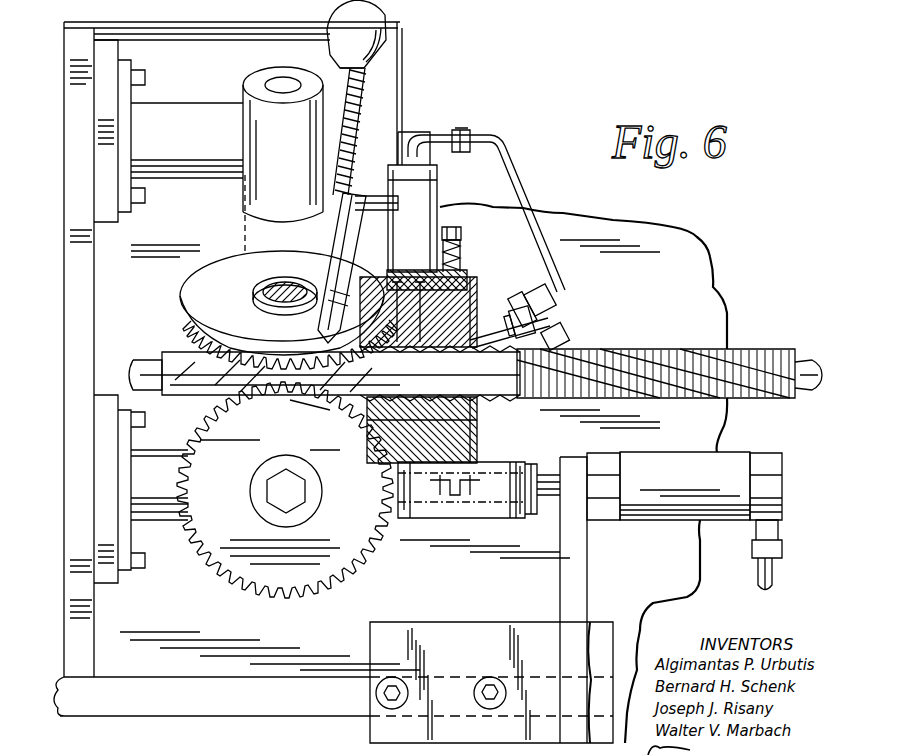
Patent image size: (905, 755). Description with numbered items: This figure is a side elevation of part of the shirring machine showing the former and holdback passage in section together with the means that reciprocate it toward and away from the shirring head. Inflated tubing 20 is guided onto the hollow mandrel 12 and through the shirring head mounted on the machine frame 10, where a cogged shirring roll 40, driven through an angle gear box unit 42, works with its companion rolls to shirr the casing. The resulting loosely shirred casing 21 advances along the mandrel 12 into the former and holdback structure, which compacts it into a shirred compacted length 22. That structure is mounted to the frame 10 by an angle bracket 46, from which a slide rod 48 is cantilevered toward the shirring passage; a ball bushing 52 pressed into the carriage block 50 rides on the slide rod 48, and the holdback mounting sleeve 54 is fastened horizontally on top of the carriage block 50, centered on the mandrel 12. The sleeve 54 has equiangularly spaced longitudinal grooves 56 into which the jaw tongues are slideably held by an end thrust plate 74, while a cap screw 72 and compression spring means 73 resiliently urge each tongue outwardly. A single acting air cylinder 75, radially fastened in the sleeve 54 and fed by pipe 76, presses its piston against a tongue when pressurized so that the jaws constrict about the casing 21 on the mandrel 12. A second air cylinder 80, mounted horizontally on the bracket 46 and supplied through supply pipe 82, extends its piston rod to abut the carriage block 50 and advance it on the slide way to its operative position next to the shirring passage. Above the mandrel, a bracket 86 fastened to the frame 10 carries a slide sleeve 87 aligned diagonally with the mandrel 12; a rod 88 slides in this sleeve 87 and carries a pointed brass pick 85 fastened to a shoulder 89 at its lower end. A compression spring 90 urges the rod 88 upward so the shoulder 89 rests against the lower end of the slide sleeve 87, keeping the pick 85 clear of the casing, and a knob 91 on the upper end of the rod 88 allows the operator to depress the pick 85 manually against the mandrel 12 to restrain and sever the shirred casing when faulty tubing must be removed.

The machine frame 10 is at (312, 705).
The hollow mandrel 12 is at (143, 359).
The metered inflated tubing 20 is at (173, 348).
The loosely shirred casing 21 is at (340, 402).
The shirred compacted length 22 is at (574, 349).
The cogged shirring roll 40 is at (218, 540).
The angle gear box unit 42 is at (143, 524).
The angle bracket 46 is at (585, 594).
The slide rod 48 is at (546, 505).
The carriage block 50 is at (473, 518).
The ball bushing 52 is at (529, 466).
The holdback mounting sleeve 54 is at (473, 446).
The groove 56 is at (471, 314).
The cap screw 72 is at (450, 230).
The compression spring means 73 is at (461, 257).
The end thrust plate 74 is at (467, 279).
The single acting air cylinder 75 is at (437, 197).
The pipe 76 is at (509, 178).
The air cylinder 80 is at (725, 457).
The supply pipe 82 is at (776, 572).
The pointed brass pick 85 is at (288, 310).
The bracket 86 is at (372, 204).
The slide sleeve 87 is at (323, 246).
The rod 88 is at (356, 124).
The shoulder 89 is at (326, 320).
The compression spring 90 is at (357, 93).
The knob 91 is at (379, 45).